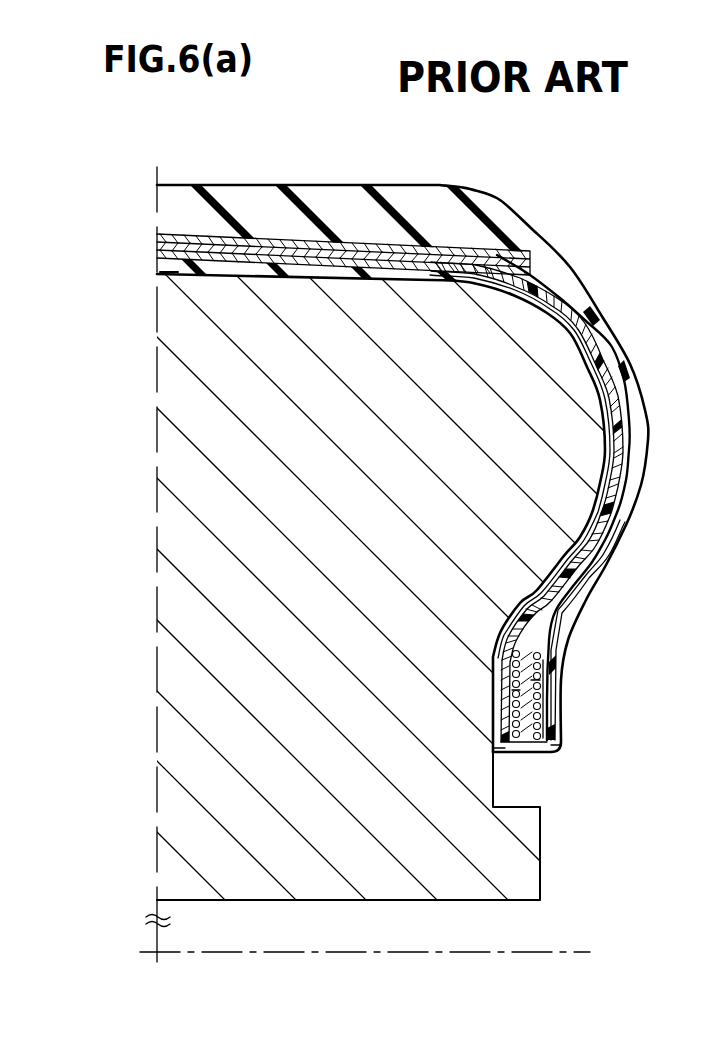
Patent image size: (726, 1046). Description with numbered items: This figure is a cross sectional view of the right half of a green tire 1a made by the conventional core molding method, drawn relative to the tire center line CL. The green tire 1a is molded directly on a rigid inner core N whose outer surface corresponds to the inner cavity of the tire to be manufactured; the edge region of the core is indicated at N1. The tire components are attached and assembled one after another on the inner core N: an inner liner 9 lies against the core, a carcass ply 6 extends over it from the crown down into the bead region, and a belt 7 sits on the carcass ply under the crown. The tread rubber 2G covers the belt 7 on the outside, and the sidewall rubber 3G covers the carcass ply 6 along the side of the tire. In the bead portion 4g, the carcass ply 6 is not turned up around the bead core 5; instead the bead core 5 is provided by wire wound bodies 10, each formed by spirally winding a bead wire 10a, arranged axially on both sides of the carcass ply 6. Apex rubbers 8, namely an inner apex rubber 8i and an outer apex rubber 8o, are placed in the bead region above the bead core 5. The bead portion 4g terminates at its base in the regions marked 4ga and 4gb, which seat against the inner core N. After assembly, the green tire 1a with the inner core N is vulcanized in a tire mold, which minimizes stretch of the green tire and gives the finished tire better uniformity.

The green tire 1a is at (546, 200).
The tread rubber 2G is at (418, 217).
The sidewall rubber 3G is at (608, 347).
The bead portion 4g is at (605, 759).
The bead toe 4ga is at (498, 747).
The bead heel 4gb is at (553, 737).
The bead core 5 is at (594, 693).
The carcass ply 6 is at (618, 425).
The belt 7 is at (150, 230).
The reinforcing layers 8 is at (636, 630).
The inner apex rubber 8i is at (560, 610).
The outer apex rubber 8o is at (560, 628).
The inner liner 9 is at (600, 485).
The wire wound body 10 is at (522, 690).
The bead wire 10a is at (535, 680).
The inner core N is at (316, 528).
The edge of former N1 is at (177, 272).
The tire equator center line CL is at (553, 950).